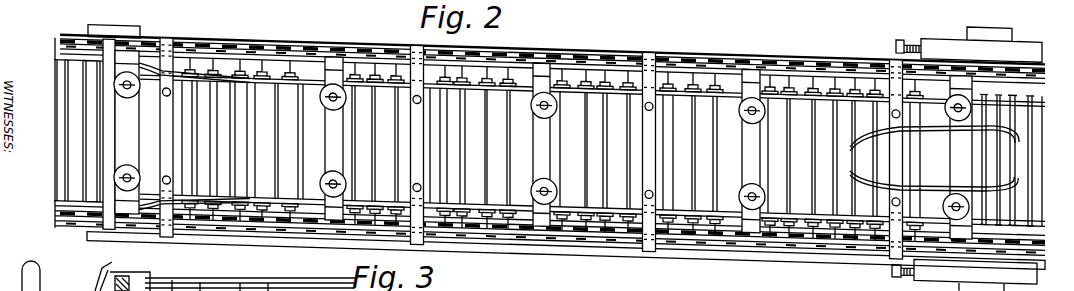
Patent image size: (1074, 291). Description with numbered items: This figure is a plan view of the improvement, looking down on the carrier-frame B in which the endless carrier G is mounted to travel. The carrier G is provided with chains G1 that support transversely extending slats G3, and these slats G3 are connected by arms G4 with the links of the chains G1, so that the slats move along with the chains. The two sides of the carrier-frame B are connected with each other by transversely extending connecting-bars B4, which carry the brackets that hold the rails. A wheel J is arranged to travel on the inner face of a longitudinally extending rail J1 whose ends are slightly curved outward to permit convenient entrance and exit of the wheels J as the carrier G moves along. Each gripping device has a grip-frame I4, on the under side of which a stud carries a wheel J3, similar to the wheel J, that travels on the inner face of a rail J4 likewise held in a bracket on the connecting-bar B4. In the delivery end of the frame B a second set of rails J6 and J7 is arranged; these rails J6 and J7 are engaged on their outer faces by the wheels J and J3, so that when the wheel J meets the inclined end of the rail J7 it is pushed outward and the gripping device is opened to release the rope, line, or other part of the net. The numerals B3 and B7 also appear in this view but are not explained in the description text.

In FIG. 2, the carrier-frame B is at (298, 40).
In FIG. 3, the end bracket B3 is at (122, 270).
In FIG. 2, the connecting-bar B4 is at (158, 141).
In FIG. 3, the lever B7 is at (42, 276).
In FIG. 2, the endless carrier G is at (535, 145).
In FIG. 3, the chains G1 is at (295, 275).
In FIG. 2, the slats G3 is at (378, 141).
In FIG. 2, the arms G4 is at (386, 66).
In FIG. 2, the grip-frame I4 is at (758, 160).
In FIG. 2, the wheel J is at (321, 105).
In FIG. 3, the wheel J is at (242, 290).
In FIG. 2, the rail J1 is at (563, 91).
In FIG. 3, the rail J1 is at (266, 290).
In FIG. 2, the wheel J3 is at (757, 194).
In FIG. 3, the wheel J3 is at (203, 289).
In FIG. 2, the rail J4 is at (717, 214).
In FIG. 3, the rail J4 is at (174, 290).
In FIG. 2, the rail J6 is at (934, 140).
In FIG. 2, the rail J7 is at (921, 191).